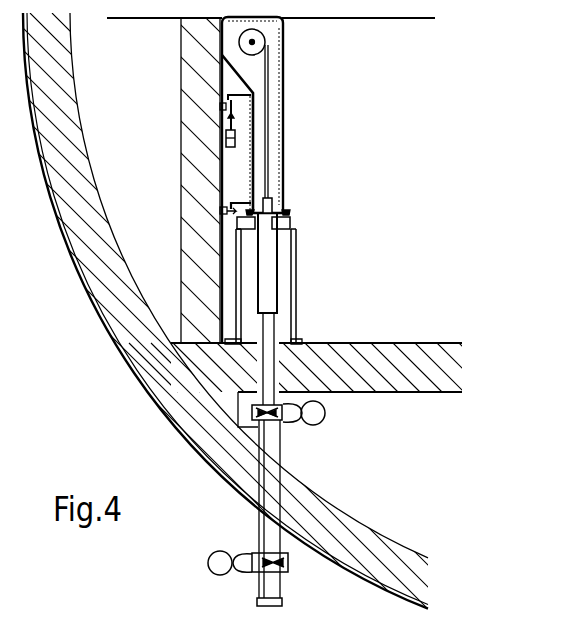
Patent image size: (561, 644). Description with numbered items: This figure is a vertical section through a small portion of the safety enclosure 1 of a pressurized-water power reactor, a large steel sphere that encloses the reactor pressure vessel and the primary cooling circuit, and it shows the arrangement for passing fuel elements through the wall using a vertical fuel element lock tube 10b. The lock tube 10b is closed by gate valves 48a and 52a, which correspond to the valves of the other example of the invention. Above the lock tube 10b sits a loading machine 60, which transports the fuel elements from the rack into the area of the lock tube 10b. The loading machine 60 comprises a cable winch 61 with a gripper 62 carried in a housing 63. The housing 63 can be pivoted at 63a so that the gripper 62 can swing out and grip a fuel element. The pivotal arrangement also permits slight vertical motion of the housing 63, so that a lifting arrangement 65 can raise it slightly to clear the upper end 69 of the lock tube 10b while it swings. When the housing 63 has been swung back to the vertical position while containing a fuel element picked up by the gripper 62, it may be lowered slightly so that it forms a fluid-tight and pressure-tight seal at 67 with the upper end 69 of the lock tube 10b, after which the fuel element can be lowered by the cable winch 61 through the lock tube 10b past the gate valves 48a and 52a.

The safety enclosure 1 is at (178, 441).
The fuel element lock tube 10b is at (282, 367).
The gate valve 48a is at (288, 419).
The gate valve 52a is at (253, 571).
The loading machine 60 is at (268, 79).
The cable winch 61 is at (265, 42).
The gripper 62 is at (276, 193).
The housing 63 is at (284, 112).
The pivot 63a is at (231, 220).
The lifting arrangement 65 is at (228, 140).
The seal 67 is at (291, 212).
The upper end of the lock tube 69 is at (283, 262).